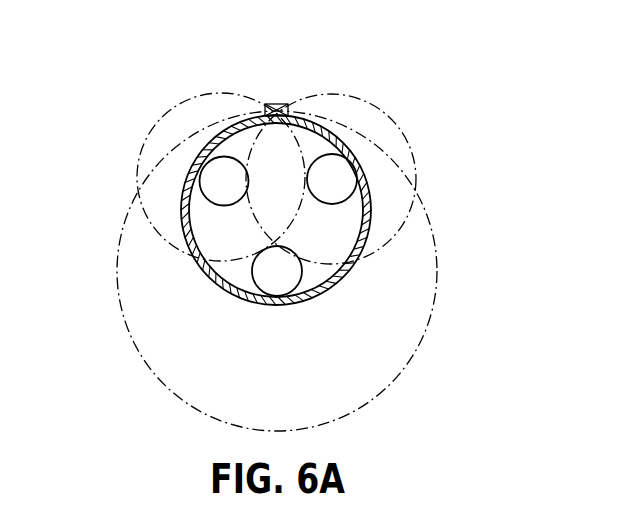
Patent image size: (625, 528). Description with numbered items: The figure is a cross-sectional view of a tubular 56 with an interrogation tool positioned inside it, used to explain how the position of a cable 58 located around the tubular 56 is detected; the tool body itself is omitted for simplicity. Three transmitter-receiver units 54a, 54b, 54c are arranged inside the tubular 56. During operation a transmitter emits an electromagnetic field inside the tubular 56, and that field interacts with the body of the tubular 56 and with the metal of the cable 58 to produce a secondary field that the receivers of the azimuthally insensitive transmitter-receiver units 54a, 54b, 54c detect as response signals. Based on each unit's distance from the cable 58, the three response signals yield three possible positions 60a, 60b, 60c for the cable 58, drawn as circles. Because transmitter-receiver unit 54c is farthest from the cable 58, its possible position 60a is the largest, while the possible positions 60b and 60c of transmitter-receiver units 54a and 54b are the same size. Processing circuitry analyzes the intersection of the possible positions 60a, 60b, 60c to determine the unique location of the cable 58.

The transmitter-receiver unit 54a is at (332, 205).
The transmitter-receiver unit 54b is at (203, 203).
The transmitter-receiver unit 54c is at (254, 283).
The tubular 56 is at (208, 275).
The cable 58 is at (282, 104).
The possible position 60a is at (415, 352).
The possible position 60b is at (397, 125).
The possible position 60c is at (143, 145).